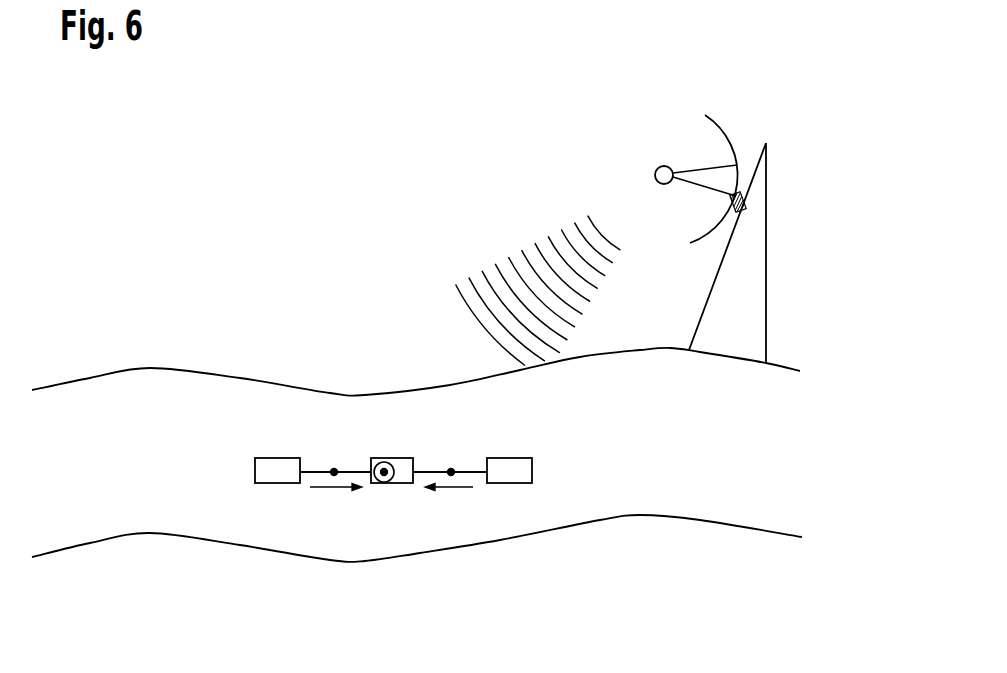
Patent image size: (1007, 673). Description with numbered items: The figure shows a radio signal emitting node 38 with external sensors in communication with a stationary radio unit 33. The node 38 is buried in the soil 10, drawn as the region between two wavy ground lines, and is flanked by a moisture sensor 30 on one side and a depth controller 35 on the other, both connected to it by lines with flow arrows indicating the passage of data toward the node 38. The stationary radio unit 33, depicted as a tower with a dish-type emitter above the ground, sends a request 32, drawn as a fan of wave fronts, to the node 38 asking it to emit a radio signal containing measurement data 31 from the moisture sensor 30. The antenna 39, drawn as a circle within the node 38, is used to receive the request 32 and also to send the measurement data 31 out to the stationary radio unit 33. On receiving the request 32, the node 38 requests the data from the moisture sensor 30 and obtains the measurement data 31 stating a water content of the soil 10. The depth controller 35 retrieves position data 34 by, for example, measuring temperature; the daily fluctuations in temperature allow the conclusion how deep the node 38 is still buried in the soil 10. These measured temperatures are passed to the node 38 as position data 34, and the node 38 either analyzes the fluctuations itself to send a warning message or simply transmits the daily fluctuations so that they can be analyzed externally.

The soil 10 is at (653, 440).
The moisture sensor 30 is at (507, 483).
The measurement data 31 is at (451, 468).
The request 32 is at (525, 230).
The stationary radio unit 33 is at (778, 147).
The position data 34 is at (334, 468).
The depth controller 35 is at (277, 483).
The node 38 is at (402, 515).
The antenna 39 is at (384, 462).